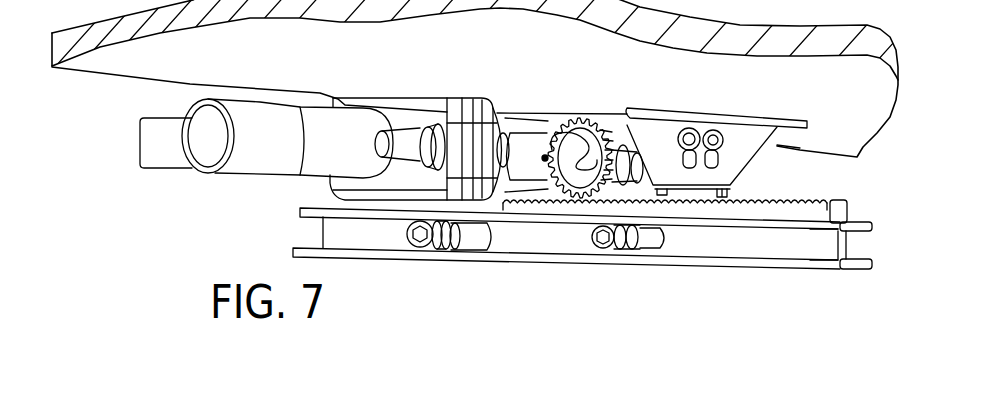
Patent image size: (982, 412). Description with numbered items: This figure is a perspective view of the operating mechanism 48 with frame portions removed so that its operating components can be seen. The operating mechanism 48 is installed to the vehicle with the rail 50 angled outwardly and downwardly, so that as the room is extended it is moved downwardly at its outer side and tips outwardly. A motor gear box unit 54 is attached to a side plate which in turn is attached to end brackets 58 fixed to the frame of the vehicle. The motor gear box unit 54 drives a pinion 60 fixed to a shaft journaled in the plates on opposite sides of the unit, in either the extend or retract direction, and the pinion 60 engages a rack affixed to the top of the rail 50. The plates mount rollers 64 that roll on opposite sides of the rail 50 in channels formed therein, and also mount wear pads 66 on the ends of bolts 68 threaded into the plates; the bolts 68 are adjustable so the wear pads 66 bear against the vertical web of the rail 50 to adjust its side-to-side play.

The operating mechanism 48 is at (447, 319).
The rail 50 is at (767, 267).
The motor gear box unit 54 is at (248, 178).
The end brackets 58 is at (730, 135).
The pinion 60 is at (560, 128).
The rollers 64 is at (432, 252).
The wear pads 66 is at (477, 250).
The bolts 68 is at (453, 250).